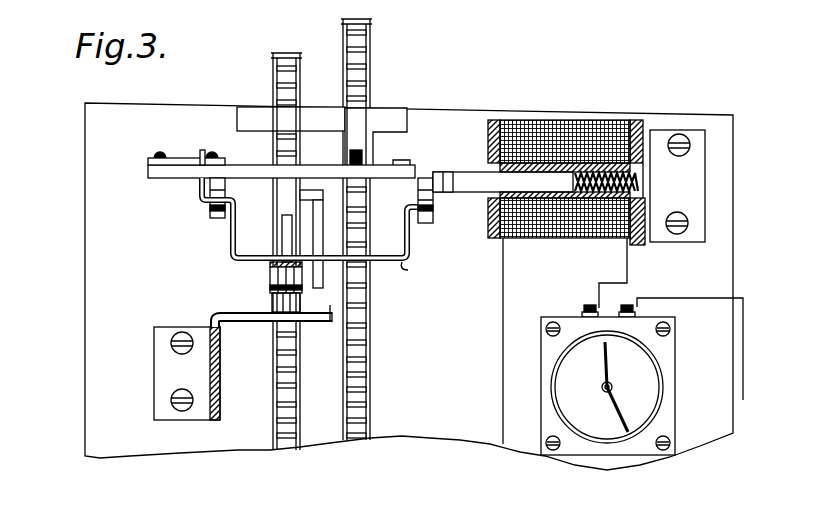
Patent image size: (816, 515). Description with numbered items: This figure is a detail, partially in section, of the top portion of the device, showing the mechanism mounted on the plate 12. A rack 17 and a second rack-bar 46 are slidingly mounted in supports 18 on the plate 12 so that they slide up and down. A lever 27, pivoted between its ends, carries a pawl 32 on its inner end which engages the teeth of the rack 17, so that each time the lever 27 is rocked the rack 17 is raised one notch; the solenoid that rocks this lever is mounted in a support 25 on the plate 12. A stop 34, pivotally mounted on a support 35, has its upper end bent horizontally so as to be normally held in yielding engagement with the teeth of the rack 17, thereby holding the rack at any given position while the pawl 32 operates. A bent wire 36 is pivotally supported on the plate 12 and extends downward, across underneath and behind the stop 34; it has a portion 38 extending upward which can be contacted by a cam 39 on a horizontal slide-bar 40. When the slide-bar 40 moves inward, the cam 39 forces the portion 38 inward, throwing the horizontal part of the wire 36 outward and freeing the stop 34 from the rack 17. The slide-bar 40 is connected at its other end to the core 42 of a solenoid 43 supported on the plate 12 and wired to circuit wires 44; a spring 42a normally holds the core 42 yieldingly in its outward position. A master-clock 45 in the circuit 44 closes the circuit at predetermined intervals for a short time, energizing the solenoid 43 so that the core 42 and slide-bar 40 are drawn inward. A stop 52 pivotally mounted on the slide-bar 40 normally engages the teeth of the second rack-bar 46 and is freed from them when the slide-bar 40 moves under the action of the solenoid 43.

The plate 12 is at (105, 166).
The rack 17 is at (294, 62).
The second rack-bar 46 is at (362, 52).
The supports 18 is at (328, 120).
The stop 52 is at (360, 128).
The cam 39 is at (166, 148).
The portion of wire 38 is at (207, 148).
The stop 34 is at (322, 183).
The pawl 32 is at (277, 238).
The slide-bar 40 is at (388, 183).
The bent wire 36 is at (402, 270).
The lever 27 is at (275, 268).
The support 25 is at (213, 322).
The support 35 is at (317, 305).
The core 42 is at (450, 173).
The spring 42a is at (607, 170).
The solenoid 43 is at (565, 132).
The circuit wires 44 is at (627, 268).
The master-clock 45 is at (613, 456).